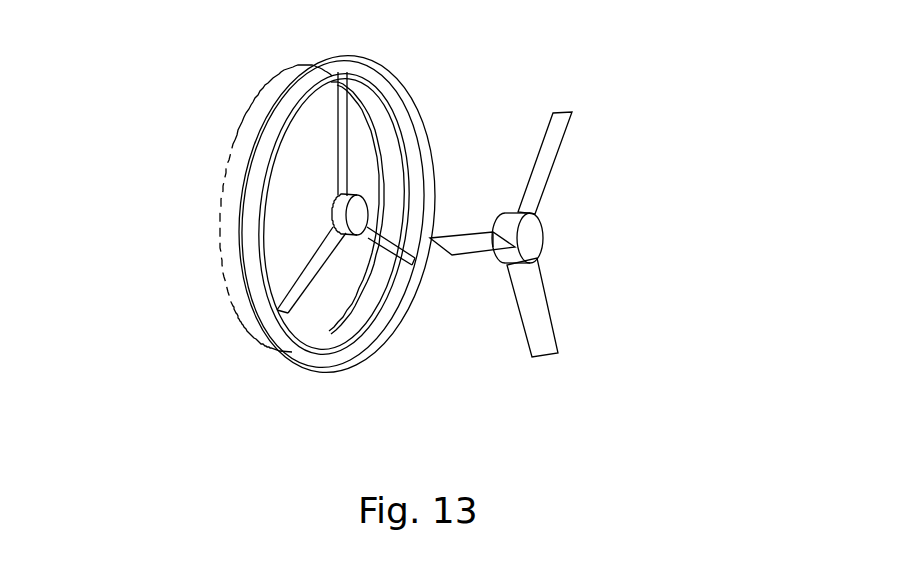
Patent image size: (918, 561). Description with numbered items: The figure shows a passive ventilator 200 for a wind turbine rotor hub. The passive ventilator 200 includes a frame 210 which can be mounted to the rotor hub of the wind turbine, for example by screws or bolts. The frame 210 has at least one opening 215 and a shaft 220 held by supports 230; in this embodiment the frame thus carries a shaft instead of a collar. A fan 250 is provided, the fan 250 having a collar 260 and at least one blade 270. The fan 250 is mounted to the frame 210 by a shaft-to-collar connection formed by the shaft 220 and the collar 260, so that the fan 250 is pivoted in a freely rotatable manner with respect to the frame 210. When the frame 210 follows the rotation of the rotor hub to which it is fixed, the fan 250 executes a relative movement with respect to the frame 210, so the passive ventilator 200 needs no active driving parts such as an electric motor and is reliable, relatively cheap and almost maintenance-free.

The passive ventilator 200 is at (172, 41).
The frame 210 is at (423, 133).
The opening 215 is at (290, 196).
The shaft 220 is at (352, 224).
The supports 230 is at (292, 287).
The fan 250 is at (616, 98).
The collar 260 is at (545, 241).
The blade 270 is at (552, 167).